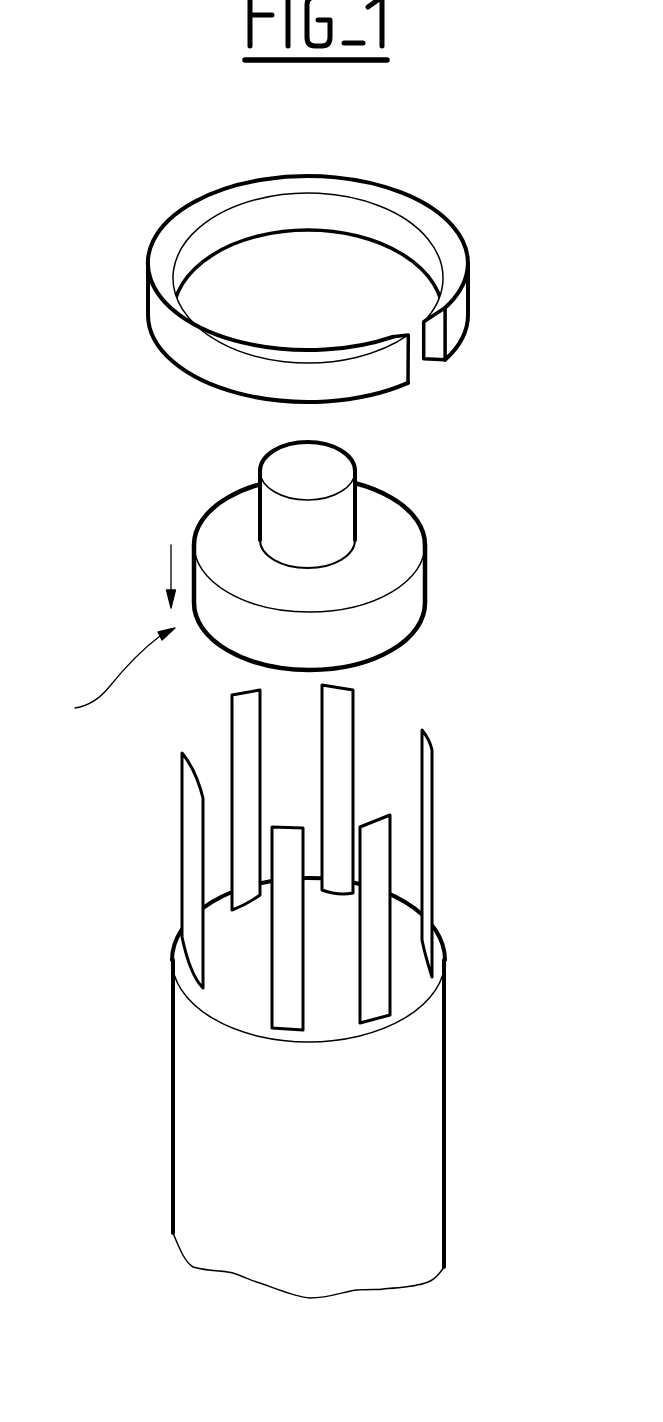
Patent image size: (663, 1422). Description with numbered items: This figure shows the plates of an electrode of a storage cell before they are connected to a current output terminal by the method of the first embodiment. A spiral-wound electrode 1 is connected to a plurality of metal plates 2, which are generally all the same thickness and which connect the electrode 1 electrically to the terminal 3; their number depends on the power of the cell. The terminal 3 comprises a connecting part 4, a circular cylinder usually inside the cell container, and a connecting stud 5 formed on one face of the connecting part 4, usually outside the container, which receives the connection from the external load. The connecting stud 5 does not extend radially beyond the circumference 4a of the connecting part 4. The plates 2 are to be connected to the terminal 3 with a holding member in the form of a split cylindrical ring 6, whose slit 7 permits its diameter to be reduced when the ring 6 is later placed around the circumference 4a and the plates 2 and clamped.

The spiral-wound electrode 1 is at (410, 1126).
The metal plates 2 is at (428, 845).
The current output terminal 3 is at (112, 639).
The connecting part 4 is at (323, 574).
The circumference of the connecting part 4a is at (398, 598).
The connecting stud 5 is at (282, 508).
The split cylindrical ring 6 is at (353, 304).
The slit 7 is at (432, 378).